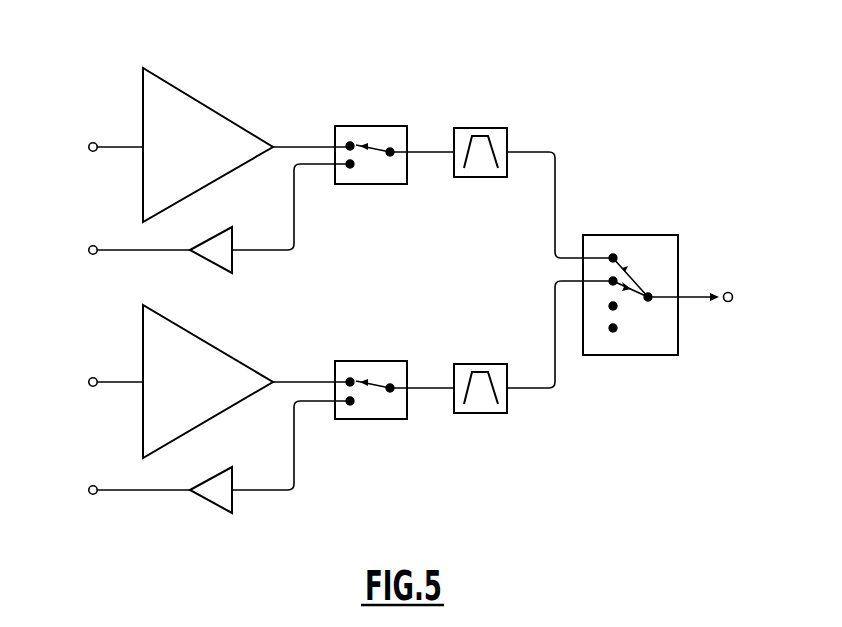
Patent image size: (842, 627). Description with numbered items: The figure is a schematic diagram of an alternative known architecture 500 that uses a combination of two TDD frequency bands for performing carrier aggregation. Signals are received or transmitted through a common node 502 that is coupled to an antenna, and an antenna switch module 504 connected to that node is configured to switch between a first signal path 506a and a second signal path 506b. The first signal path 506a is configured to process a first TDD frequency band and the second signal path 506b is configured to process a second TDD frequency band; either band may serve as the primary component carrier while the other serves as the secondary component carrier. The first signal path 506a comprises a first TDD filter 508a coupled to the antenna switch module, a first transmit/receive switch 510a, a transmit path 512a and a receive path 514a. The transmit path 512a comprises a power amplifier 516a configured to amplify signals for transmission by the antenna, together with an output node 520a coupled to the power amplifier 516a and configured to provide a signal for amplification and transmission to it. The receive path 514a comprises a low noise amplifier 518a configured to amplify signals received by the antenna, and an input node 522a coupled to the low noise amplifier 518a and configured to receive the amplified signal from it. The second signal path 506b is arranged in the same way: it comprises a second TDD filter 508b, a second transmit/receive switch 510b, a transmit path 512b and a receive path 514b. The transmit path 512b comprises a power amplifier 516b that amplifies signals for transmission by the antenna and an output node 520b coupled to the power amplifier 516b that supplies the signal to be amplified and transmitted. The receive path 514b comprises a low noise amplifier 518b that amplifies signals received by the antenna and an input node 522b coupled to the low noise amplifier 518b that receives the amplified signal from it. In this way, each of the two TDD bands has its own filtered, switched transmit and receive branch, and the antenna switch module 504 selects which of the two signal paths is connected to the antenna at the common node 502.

The alternative known architecture 500 is at (640, 62).
The common node 502 is at (729, 302).
The antenna switch module 504 is at (657, 235).
The first signal path 506a is at (557, 153).
The second signal path 506b is at (555, 385).
The first TDD filter 508a is at (478, 128).
The second TDD filter 508b is at (478, 364).
The first transmit/receive switch 510a is at (377, 126).
The second transmit/receive switch 510b is at (377, 361).
The transmit path 512a is at (310, 146).
The transmit path 512b is at (310, 381).
The receive path 514a is at (294, 250).
The receive path 514b is at (294, 490).
The power amplifier 516a is at (215, 111).
The power amplifier 516b is at (215, 347).
The low noise amplifier 518a is at (232, 270).
The low noise amplifier 518b is at (232, 510).
The output node 520a is at (94, 142).
The output node 520b is at (94, 378).
The input node 522a is at (94, 246).
The input node 522b is at (94, 486).